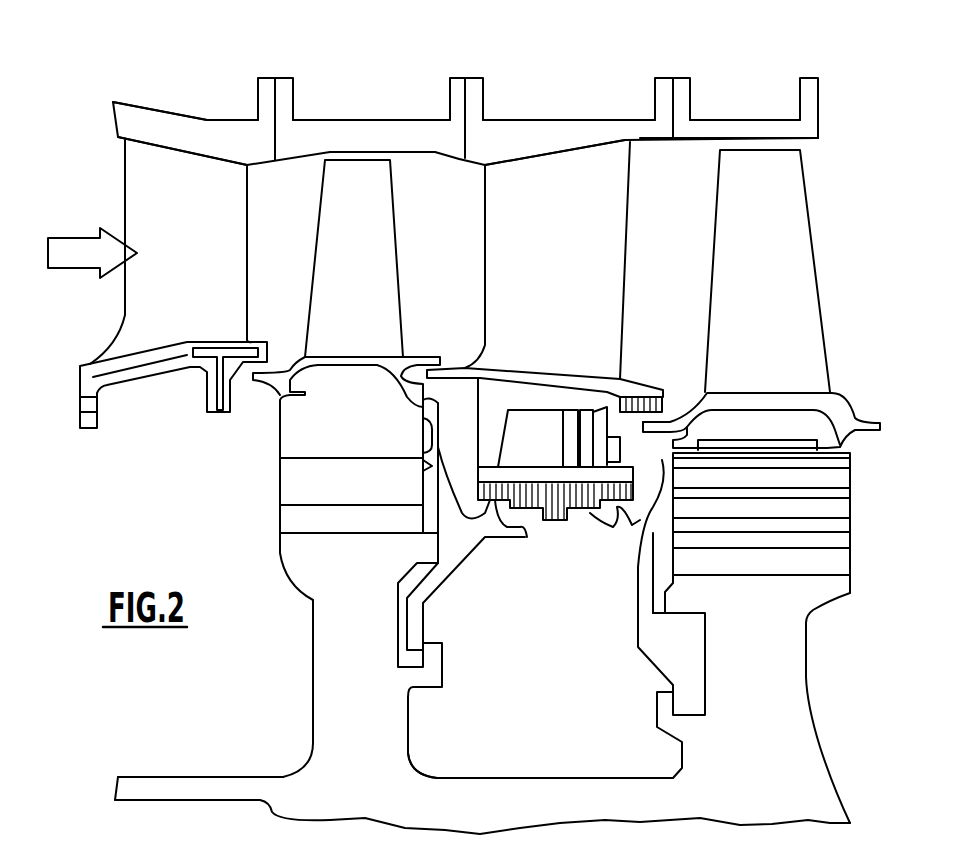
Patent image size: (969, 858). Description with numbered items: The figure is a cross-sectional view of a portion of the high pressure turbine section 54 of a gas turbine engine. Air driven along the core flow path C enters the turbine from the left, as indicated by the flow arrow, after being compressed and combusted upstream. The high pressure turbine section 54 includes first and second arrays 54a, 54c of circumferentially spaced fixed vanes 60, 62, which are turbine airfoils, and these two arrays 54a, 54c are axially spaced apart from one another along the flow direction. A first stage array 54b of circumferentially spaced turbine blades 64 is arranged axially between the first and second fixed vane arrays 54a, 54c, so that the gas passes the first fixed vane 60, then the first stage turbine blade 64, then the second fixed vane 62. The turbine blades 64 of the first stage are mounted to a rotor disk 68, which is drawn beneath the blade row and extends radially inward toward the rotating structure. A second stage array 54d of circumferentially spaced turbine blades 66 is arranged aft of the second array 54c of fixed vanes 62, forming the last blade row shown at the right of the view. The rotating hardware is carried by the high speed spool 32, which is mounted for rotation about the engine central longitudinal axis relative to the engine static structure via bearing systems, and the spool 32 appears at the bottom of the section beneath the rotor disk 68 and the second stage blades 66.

The high pressure turbine section 54 is at (586, 72).
The first array of fixed vanes 54a is at (170, 105).
The first stage array of turbine blades 54b is at (375, 118).
The second array of fixed vanes 54c is at (518, 118).
The second stage array of turbine blades 54d is at (729, 118).
The fixed vane 60 is at (124, 216).
The fixed vane 62 is at (486, 211).
The turbine blade 64 is at (315, 234).
The turbine blade 66 is at (711, 242).
The rotor disk 68 is at (388, 718).
The high speed spool 32 is at (116, 790).
The core flow path C is at (73, 262).